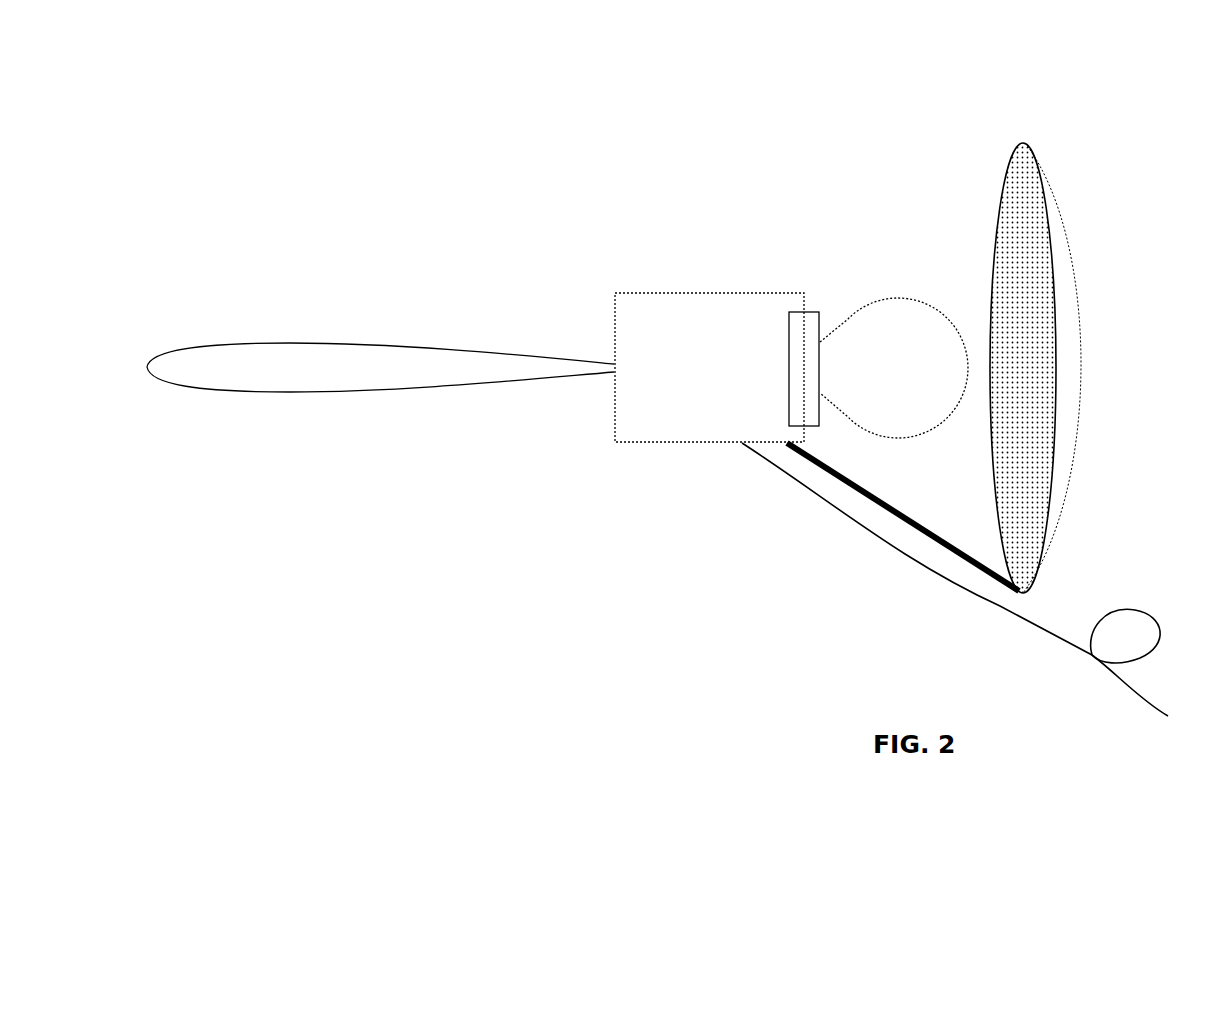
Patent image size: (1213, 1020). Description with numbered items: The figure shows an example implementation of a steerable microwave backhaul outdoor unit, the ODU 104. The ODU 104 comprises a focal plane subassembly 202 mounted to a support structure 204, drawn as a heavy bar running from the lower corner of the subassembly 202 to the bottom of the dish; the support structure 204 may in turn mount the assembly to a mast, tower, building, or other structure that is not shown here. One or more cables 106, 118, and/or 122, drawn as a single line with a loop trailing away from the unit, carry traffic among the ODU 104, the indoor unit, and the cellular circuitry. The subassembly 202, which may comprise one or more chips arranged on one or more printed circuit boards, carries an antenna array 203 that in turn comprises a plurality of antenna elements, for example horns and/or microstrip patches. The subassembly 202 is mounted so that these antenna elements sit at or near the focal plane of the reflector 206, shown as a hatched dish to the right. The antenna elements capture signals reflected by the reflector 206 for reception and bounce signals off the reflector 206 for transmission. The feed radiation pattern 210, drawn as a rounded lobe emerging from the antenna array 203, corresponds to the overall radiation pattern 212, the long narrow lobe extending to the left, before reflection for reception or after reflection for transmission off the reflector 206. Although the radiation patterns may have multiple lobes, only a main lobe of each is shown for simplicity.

The ODU 104 is at (662, 115).
The subassembly 202 is at (694, 403).
The antenna array 203 is at (811, 385).
The support structure 204 is at (904, 518).
The reflector 206 is at (1027, 143).
The radiation pattern 210 is at (897, 299).
The radiation pattern 212 is at (306, 343).
The cable 106 is at (955, 579).
The cable 118 is at (955, 579).
The cable 122 is at (978, 593).